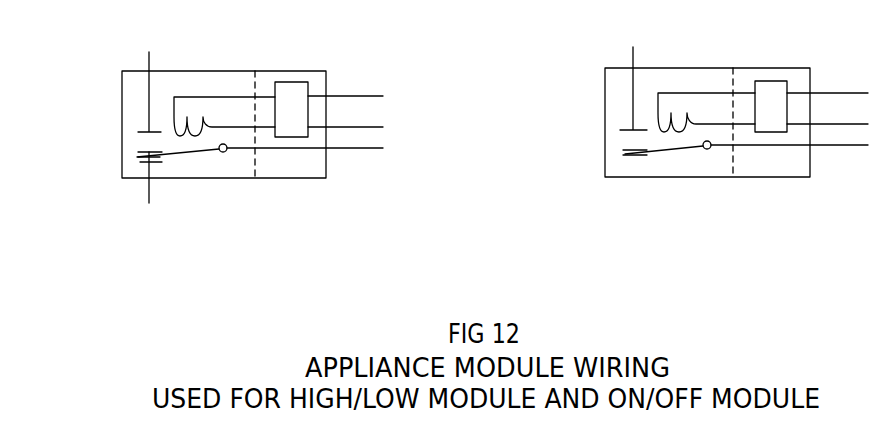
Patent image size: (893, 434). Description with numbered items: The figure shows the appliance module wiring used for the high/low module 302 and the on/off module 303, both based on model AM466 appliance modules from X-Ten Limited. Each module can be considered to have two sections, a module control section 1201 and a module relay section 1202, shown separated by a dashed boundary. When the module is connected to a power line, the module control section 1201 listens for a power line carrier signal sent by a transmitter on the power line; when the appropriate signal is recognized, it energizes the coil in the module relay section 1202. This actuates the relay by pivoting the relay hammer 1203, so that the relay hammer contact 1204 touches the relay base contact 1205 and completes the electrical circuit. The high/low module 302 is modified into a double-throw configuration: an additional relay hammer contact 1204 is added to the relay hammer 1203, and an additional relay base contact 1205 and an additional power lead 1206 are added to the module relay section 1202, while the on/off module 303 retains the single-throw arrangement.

The high/low module 302 is at (195, 71).
The on/off module 303 is at (687, 68).
The module control section 1201 is at (313, 178).
The module relay section 1202 is at (240, 178).
The relay hammer 1203 is at (188, 153).
The relay hammer contact 1204 is at (137, 150).
The relay base contact 1205 is at (143, 131).
The power lead 1206 is at (143, 194).